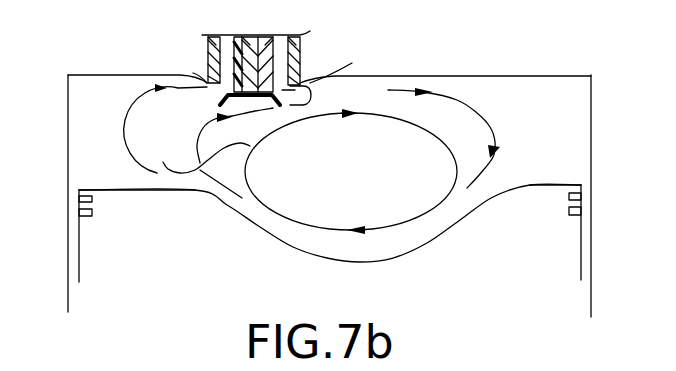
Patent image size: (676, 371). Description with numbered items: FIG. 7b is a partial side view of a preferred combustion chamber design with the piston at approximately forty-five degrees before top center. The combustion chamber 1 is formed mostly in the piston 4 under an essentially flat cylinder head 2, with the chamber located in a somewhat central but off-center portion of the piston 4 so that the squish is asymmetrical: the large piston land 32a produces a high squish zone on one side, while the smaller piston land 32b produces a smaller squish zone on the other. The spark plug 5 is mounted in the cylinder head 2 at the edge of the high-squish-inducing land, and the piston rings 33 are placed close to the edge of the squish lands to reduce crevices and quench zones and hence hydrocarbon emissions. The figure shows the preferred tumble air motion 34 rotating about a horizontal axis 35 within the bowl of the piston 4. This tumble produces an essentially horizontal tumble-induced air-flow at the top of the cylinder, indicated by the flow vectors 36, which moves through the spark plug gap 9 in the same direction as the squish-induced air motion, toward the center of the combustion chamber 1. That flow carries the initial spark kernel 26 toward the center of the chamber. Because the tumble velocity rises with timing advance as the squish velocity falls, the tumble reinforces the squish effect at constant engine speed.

The combustion chamber 1 is at (536, 141).
The cylinder head 2 is at (414, 67).
The piston 4 is at (226, 283).
The spark plug 5 is at (301, 63).
The spark plug gap 9 is at (273, 61).
The initial spark kernel 26 is at (310, 98).
The large piston land 32a is at (177, 223).
The smaller piston land 32b is at (545, 231).
The piston rings 33 is at (92, 217).
The tumble air motion 34 is at (493, 137).
The horizontal axis 35 is at (351, 171).
The flow vectors 36 is at (183, 88).